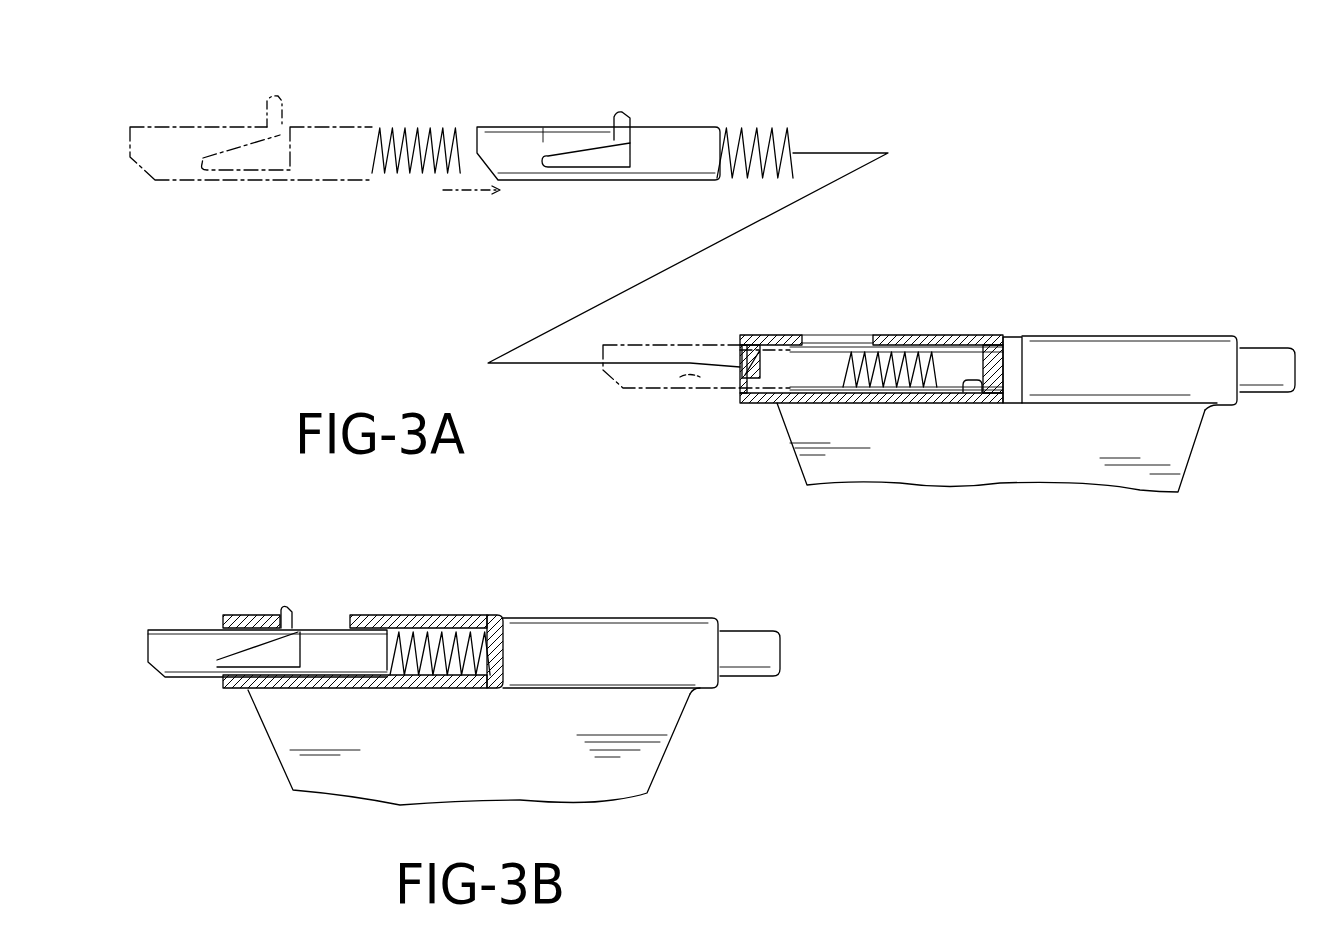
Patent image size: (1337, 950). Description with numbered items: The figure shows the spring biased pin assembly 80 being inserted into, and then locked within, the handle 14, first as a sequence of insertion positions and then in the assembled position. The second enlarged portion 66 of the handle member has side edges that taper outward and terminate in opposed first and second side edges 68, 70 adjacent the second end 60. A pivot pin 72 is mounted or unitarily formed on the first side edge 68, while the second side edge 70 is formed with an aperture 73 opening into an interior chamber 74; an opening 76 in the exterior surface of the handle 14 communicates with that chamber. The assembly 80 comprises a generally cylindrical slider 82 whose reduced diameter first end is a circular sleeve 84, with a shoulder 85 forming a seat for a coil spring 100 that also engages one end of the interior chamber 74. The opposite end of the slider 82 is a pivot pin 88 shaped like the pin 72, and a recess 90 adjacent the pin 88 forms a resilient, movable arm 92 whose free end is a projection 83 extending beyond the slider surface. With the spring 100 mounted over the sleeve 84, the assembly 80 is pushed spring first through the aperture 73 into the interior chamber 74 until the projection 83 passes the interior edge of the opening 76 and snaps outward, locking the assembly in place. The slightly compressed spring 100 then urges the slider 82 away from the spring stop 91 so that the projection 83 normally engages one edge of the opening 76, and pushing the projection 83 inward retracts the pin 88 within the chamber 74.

In FIG. 3A, the handle 14 is at (1192, 463).
In FIG. 3B, the handle 14 is at (657, 787).
In FIG. 3A, the second end 60 is at (1097, 337).
In FIG. 3B, the second end 60 is at (622, 618).
In FIG. 3A, the second enlarged portion 66 is at (1085, 470).
In FIG. 3B, the second enlarged portion 66 is at (637, 770).
In FIG. 3A, the first side edge 68 is at (1243, 345).
In FIG. 3B, the first side edge 68 is at (727, 618).
In FIG. 3A, the second side edge 70 is at (767, 407).
In FIG. 3A, the pivot pin 72 is at (1262, 378).
In FIG. 3B, the pivot pin 72 is at (762, 663).
In FIG. 3A, the aperture 73 is at (745, 355).
In FIG. 3B, the aperture 73 is at (220, 640).
In FIG. 3A, the interior chamber 74 is at (980, 377).
In FIG. 3A, the opening 76 is at (857, 337).
In FIG. 3B, the opening 76 is at (350, 618).
In FIG. 3A, the spring biased pin assembly 80 is at (700, 83).
In FIG. 3B, the spring biased pin assembly 80 is at (440, 560).
In FIG. 3A, the slider 82 is at (237, 187).
In FIG. 3B, the slider 82 is at (197, 680).
In FIG. 3A, the projection 83 is at (272, 98).
In FIG. 3B, the projection 83 is at (285, 605).
In FIG. 3A, the circular sleeve 84 is at (385, 125).
In FIG. 3A, the shoulder 85 is at (380, 182).
In FIG. 3A, the pivot pin 88 is at (157, 160).
In FIG. 3B, the pivot pin 88 is at (165, 655).
In FIG. 3A, the recess 90 is at (222, 163).
In FIG. 3A, the spring stop 91 is at (992, 366).
In FIG. 3A, the resilient arm 92 is at (220, 137).
In FIG. 3A, the coil spring 100 is at (430, 182).
In FIG. 3B, the coil spring 100 is at (440, 635).